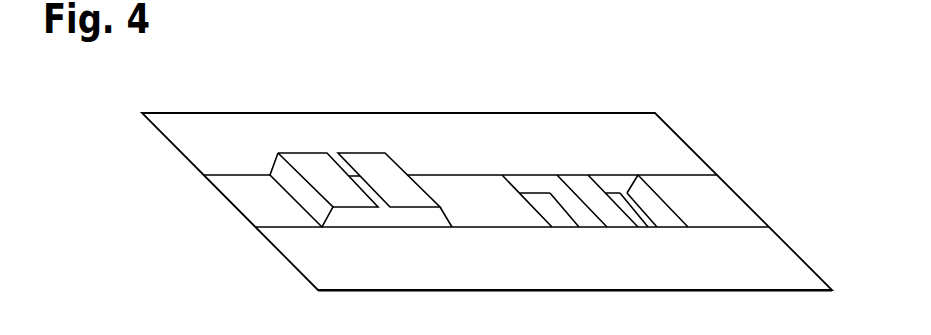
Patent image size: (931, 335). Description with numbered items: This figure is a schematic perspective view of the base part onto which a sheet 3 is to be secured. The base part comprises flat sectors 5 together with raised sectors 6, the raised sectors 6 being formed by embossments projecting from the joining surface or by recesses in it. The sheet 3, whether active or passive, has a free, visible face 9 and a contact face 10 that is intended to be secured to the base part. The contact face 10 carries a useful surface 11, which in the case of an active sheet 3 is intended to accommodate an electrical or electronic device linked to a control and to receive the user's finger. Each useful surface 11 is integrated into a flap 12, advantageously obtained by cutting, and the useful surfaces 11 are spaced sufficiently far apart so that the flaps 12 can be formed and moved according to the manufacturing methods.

The sheet 3 is at (340, 298).
The flat sectors 5 is at (459, 126).
The raised sectors 6 is at (271, 139).
The visible face 9 is at (681, 141).
The contact face 10 is at (619, 306).
The useful surface 11 is at (333, 186).
The flap 12 is at (361, 130).